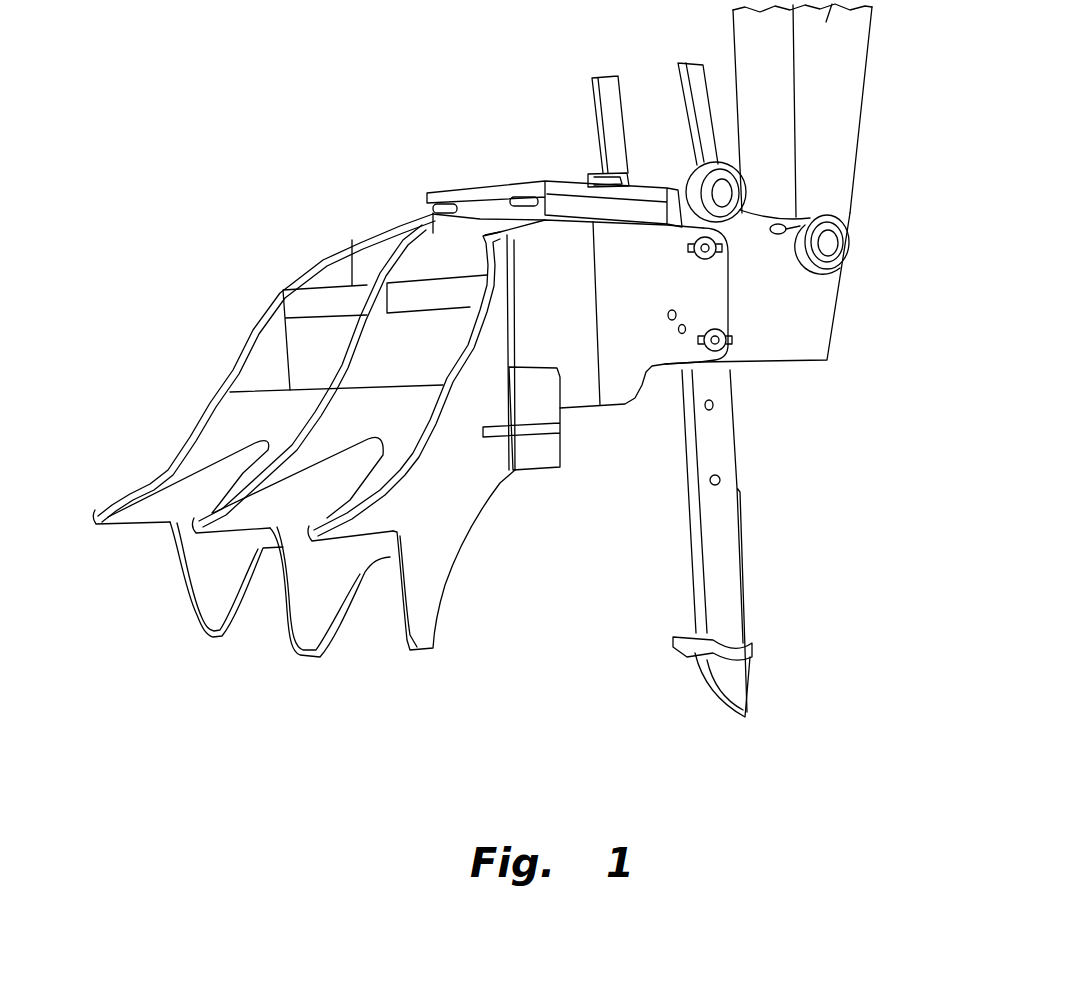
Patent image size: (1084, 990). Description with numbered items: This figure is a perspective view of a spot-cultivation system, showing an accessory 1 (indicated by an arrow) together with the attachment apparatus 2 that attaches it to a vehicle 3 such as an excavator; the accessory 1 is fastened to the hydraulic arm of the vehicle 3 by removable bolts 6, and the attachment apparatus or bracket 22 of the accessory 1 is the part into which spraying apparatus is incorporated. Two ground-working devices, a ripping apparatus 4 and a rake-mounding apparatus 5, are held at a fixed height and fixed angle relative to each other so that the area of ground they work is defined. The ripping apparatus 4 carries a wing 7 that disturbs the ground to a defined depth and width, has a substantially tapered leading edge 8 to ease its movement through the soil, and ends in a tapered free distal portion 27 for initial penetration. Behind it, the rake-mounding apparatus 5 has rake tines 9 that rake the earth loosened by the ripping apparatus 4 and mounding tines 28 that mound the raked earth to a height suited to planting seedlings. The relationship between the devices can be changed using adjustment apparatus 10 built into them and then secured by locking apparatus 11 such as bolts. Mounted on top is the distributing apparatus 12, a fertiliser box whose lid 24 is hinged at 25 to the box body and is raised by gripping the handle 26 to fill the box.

The accessory 1 is at (238, 176).
The attachment apparatus 2 is at (802, 330).
The vehicle 3 is at (832, 100).
The ripping apparatus 4 is at (694, 618).
The rake-mounding apparatus 5 is at (443, 602).
The removable bolts 6 is at (827, 243).
The wing 7 is at (754, 650).
The leading edge 8 is at (746, 592).
The rake tines 9 is at (190, 528).
The adjustment apparatus 10 is at (706, 407).
The locking apparatus 11 is at (723, 347).
The distributing apparatus 12 is at (467, 196).
The bracket 22 is at (790, 228).
The lid 24 is at (425, 203).
The hinge 25 is at (430, 214).
The handle 26 is at (587, 179).
The free distal portion 27 is at (712, 692).
The mounding tines 28 is at (297, 657).